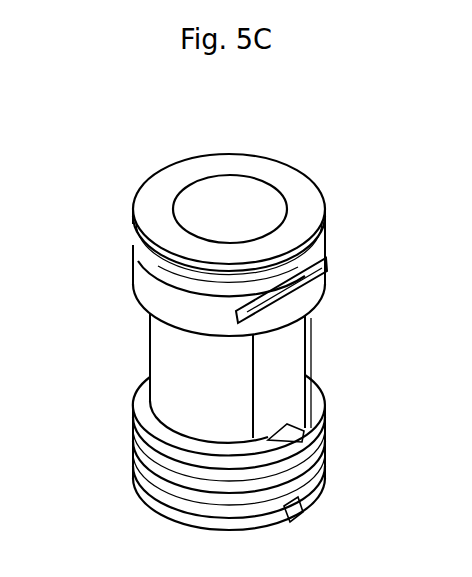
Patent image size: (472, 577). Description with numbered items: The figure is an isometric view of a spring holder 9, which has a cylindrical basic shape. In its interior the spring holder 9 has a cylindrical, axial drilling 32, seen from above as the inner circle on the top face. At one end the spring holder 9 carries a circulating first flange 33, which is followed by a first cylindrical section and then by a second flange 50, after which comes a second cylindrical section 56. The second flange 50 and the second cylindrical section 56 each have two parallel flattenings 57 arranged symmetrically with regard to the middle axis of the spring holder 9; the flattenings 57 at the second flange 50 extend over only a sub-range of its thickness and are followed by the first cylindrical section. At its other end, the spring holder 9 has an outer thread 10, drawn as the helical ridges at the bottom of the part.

The spring holder 9 is at (322, 345).
The outer thread 10 is at (303, 462).
The axial drilling 32 is at (232, 207).
The first flange 33 is at (325, 232).
The second flange 50 is at (192, 318).
The second cylindrical section 56 is at (198, 367).
The flattenings 57 is at (290, 298).